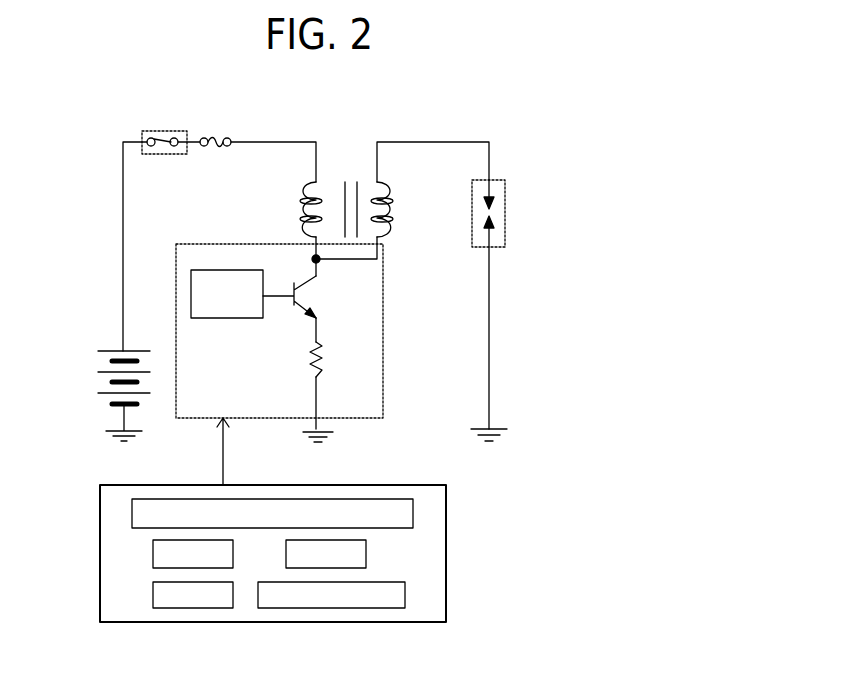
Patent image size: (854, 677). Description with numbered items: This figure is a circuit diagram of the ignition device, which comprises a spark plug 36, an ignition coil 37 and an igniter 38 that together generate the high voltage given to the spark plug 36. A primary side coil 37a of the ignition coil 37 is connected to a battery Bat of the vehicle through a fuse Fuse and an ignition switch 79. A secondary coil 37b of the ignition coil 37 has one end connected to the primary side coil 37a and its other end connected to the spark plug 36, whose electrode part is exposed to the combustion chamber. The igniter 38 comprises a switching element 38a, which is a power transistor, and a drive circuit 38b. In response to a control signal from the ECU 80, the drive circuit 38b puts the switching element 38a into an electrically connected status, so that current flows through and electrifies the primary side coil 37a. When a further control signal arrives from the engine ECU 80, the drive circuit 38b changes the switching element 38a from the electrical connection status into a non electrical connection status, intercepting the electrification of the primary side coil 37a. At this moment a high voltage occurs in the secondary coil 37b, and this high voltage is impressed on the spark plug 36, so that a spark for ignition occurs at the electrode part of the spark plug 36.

The ignition switch 79 is at (166, 131).
The fuse Fuse is at (225, 129).
The ignition coil 37 is at (352, 166).
The primary side coil 37a is at (288, 201).
The secondary coil 37b is at (410, 212).
The spark plug 36 is at (506, 211).
The igniter 38 is at (279, 321).
The switching element 38a is at (315, 297).
The drive circuit 38b is at (216, 320).
The battery Bat is at (76, 373).
The ECU 80 is at (310, 623).